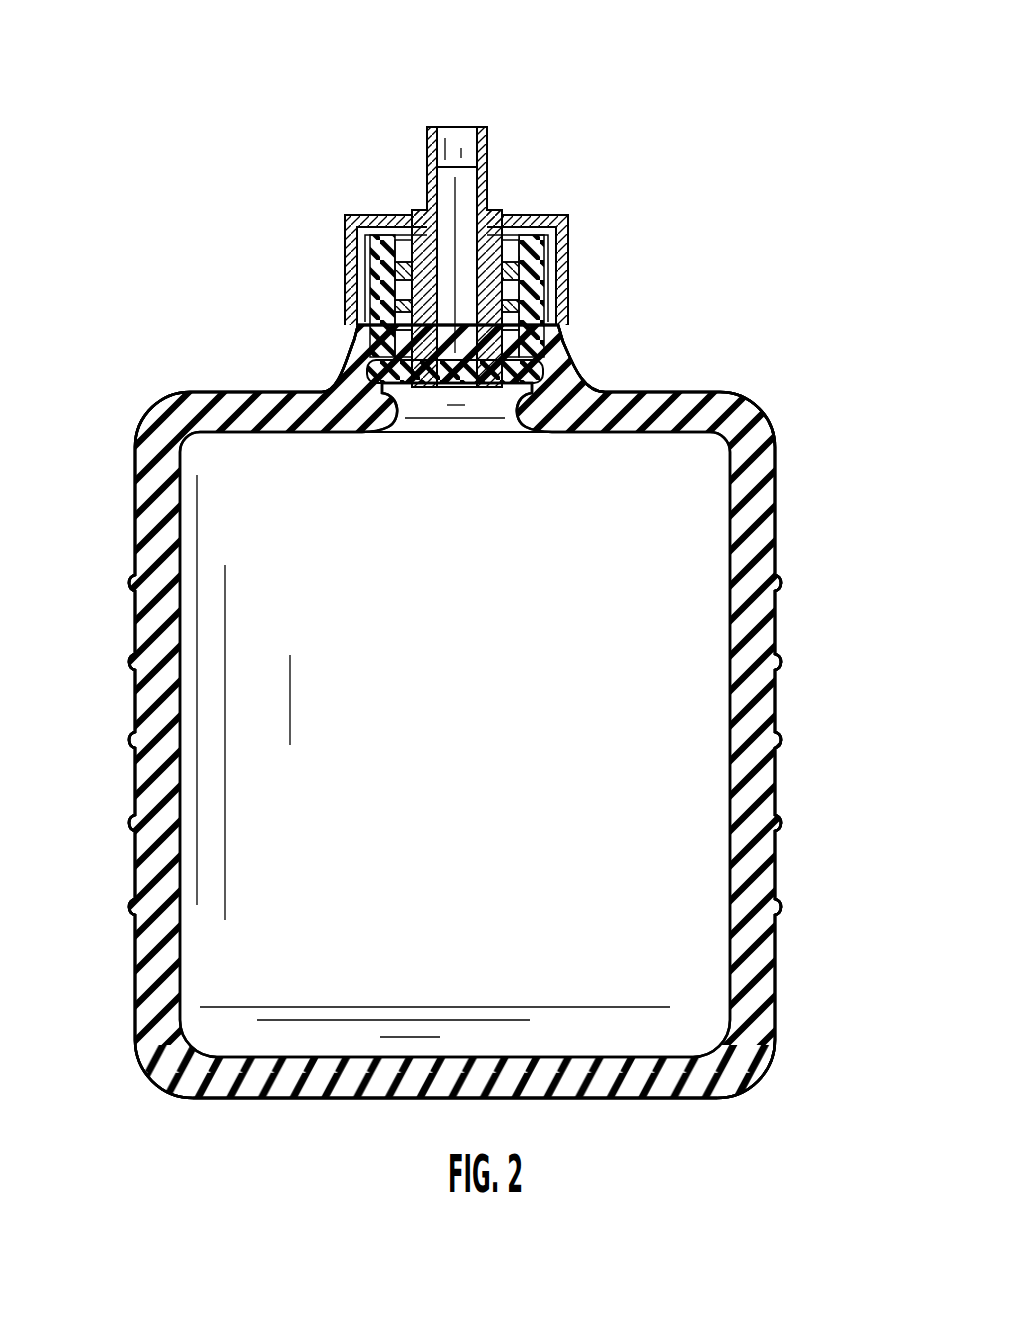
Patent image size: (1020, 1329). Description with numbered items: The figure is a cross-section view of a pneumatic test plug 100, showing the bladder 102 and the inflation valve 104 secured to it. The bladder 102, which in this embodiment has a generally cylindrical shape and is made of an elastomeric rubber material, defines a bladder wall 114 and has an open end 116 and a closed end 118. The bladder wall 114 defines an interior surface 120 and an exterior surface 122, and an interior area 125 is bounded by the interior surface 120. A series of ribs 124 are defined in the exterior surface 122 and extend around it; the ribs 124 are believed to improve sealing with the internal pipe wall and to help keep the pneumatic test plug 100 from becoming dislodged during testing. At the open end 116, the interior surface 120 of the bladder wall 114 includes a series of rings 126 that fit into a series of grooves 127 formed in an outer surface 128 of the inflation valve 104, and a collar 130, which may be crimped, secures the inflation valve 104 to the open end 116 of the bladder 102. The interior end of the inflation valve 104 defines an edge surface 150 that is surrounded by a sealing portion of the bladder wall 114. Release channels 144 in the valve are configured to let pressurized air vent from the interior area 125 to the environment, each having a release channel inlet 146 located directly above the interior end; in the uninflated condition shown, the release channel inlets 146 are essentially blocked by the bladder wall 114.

The pneumatic test plug 100 is at (618, 52).
The bladder 102 is at (812, 536).
The inflation valve 104 is at (512, 167).
The bladder wall 114 is at (733, 420).
The open end 116 is at (417, 442).
The closed end 118 is at (226, 1134).
The interior surface 120 is at (182, 456).
The exterior surface 122 is at (137, 507).
The ribs 124 is at (777, 742).
The interior area 125 is at (674, 686).
The rings 126 is at (372, 268).
The grooves 127 is at (520, 268).
The outer surface 128 is at (386, 285).
The collar 130 is at (555, 220).
The release channel 144 is at (399, 236).
The release channel inlet 146 is at (395, 352).
The edge surface 150 is at (540, 362).